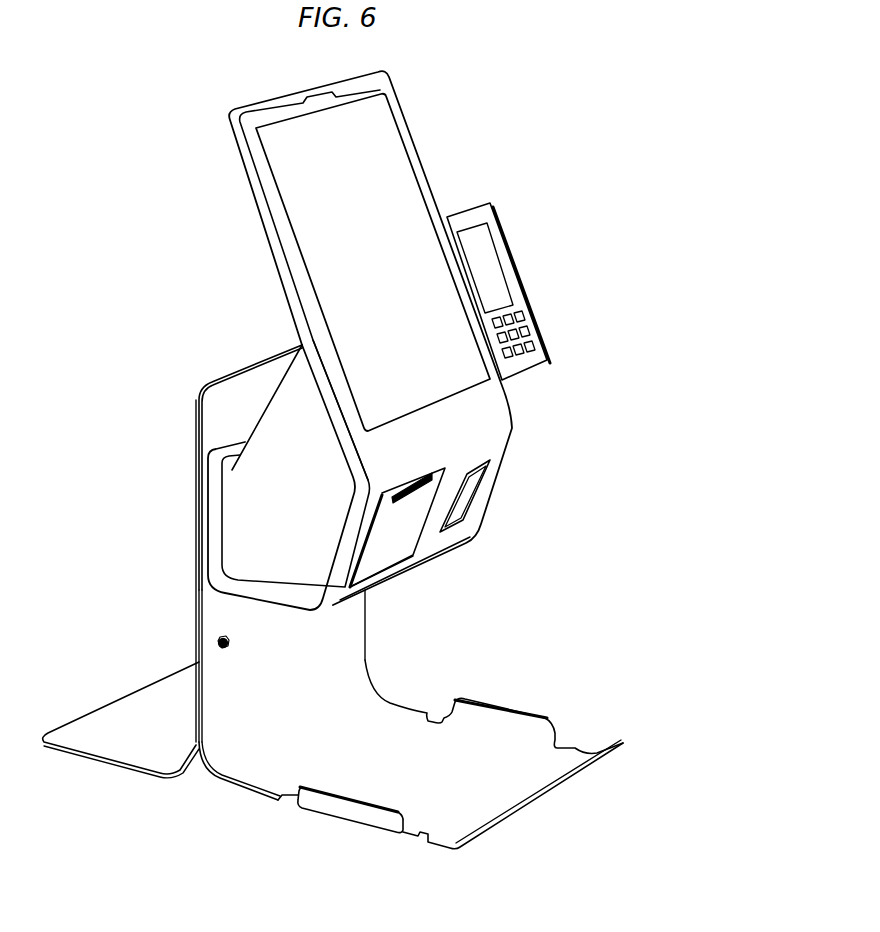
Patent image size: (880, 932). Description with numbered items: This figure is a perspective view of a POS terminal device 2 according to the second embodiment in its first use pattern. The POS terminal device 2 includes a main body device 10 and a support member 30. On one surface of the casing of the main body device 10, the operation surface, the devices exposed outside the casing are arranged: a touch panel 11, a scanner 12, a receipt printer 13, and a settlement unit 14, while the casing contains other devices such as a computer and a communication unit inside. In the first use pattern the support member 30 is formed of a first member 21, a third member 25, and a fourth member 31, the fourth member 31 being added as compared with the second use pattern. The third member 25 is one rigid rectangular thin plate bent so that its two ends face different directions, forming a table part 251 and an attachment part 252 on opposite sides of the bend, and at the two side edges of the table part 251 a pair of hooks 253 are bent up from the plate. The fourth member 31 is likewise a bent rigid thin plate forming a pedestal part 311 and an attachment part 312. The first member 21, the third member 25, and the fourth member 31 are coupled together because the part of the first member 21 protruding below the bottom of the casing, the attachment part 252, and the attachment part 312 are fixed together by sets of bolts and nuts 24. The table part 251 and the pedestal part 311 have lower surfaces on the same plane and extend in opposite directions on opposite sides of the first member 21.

The POS terminal device 2 is at (172, 178).
The main body device 10 is at (505, 163).
The touch panel 11 is at (397, 135).
The scanner 12 is at (462, 500).
The receipt printer 13 is at (420, 537).
The settlement unit 14 is at (518, 270).
The first member 21 is at (210, 420).
The nut 24 is at (230, 647).
The third member 25 is at (342, 857).
The table part 251 is at (283, 787).
The attachment part 252 is at (218, 736).
The hook 253 is at (513, 722).
The support member 30 is at (146, 548).
The fourth member 31 is at (102, 597).
The pedestal part 311 is at (164, 693).
The attachment part 312 is at (195, 620).